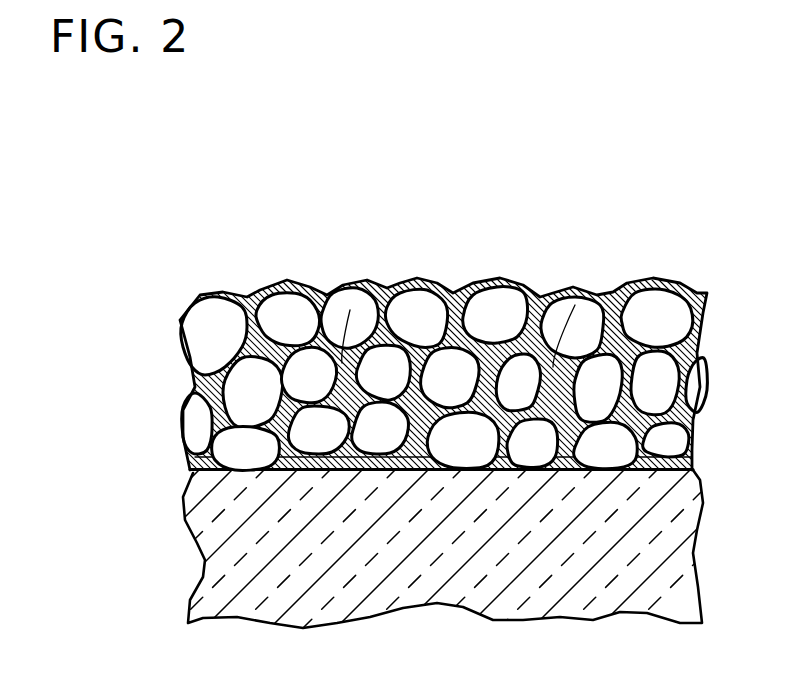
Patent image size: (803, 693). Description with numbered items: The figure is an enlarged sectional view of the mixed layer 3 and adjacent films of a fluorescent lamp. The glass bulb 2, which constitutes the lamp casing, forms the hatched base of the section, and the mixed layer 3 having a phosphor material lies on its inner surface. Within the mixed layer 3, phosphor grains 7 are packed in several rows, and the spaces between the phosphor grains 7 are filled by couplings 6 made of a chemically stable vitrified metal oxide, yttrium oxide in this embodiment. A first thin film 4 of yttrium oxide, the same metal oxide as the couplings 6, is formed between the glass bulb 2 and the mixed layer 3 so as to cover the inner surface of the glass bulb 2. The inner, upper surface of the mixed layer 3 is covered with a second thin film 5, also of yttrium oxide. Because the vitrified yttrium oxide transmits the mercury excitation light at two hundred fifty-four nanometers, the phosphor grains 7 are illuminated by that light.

The glass bulb 2 is at (668, 538).
The mixed layer 3 is at (401, 331).
The first thin film 4 is at (692, 458).
The second thin film 5 is at (484, 283).
The couplings 6 is at (342, 363).
The phosphor grains 7 is at (412, 300).